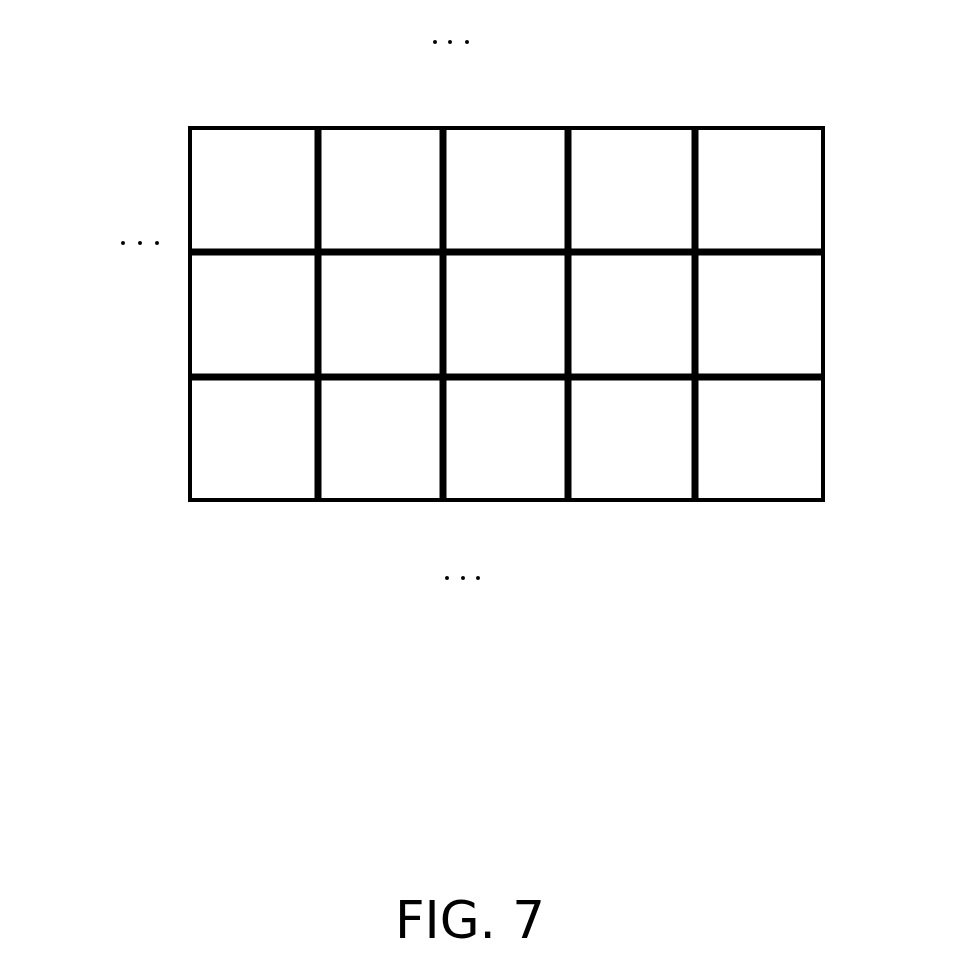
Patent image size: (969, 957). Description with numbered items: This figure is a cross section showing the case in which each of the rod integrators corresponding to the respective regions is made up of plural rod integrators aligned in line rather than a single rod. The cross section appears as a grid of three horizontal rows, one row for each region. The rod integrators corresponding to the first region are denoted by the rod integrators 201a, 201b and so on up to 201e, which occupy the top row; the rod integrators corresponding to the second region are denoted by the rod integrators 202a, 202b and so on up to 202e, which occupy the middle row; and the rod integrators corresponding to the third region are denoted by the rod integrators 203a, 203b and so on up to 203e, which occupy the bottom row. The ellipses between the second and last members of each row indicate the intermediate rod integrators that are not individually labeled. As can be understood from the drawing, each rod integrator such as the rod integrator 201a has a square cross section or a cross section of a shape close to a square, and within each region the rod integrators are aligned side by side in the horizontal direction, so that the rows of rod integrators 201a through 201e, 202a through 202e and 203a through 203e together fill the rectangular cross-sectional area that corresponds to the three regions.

The rod integrator 201a is at (238, 150).
The rod integrator 201b is at (370, 150).
The rod integrator 201e is at (780, 150).
The rod integrator 202a is at (207, 325).
The rod integrator 202b is at (368, 304).
The rod integrator 202e is at (803, 322).
The rod integrator 203a is at (253, 473).
The rod integrator 203b is at (388, 473).
The rod integrator 203e is at (787, 473).